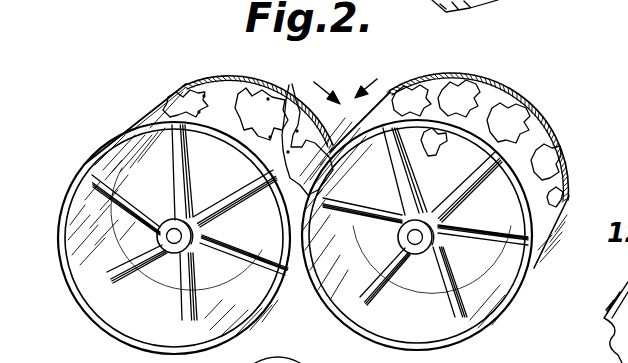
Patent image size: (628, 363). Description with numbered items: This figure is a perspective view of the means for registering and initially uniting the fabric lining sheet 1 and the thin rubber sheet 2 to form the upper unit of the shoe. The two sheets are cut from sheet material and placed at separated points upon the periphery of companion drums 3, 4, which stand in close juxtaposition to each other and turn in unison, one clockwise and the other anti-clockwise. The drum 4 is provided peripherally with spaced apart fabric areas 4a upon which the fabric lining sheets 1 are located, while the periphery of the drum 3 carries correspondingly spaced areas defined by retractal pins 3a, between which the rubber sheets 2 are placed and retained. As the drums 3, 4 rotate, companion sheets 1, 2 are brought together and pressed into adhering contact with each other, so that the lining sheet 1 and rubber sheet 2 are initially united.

The fabric lining sheet 1 is at (462, 100).
The thin rubber sheet 2 is at (250, 93).
The drum 3 is at (84, 166).
The retractal pins 3a is at (252, 92).
The drum 4 is at (516, 283).
The fabric areas 4a is at (451, 90).